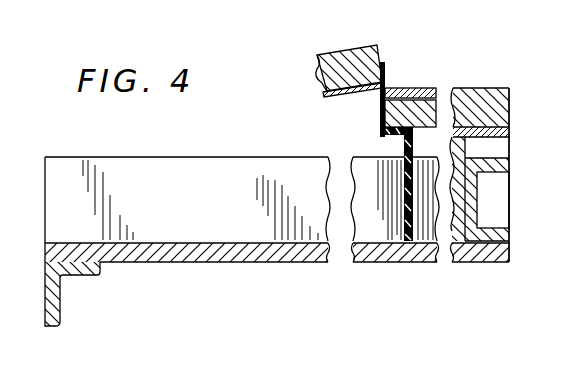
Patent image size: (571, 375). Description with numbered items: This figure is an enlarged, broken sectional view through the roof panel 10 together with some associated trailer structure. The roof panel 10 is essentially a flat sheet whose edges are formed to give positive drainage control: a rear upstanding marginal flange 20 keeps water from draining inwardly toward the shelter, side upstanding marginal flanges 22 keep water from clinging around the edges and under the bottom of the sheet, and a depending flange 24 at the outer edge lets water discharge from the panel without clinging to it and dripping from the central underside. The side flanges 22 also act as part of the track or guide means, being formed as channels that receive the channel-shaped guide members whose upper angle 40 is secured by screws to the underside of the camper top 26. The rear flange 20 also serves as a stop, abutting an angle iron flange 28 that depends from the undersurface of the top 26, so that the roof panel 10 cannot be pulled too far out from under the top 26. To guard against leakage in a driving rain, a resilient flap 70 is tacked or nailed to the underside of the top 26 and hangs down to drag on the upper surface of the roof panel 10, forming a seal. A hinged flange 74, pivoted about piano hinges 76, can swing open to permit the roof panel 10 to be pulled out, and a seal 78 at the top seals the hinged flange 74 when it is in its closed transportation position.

The roof panel 10 is at (465, 262).
The rear upstanding marginal flange 20 is at (470, 213).
The side upstanding marginal flanges 22 is at (180, 212).
The depending flange 24 is at (60, 303).
The top 26 is at (510, 89).
The angle iron flange 28 is at (486, 128).
The upper angle 40 is at (500, 135).
The resilient flap 70 is at (403, 188).
The hinged flange 74 is at (373, 51).
The piano hinges 76 is at (384, 82).
The seal 78 is at (381, 113).